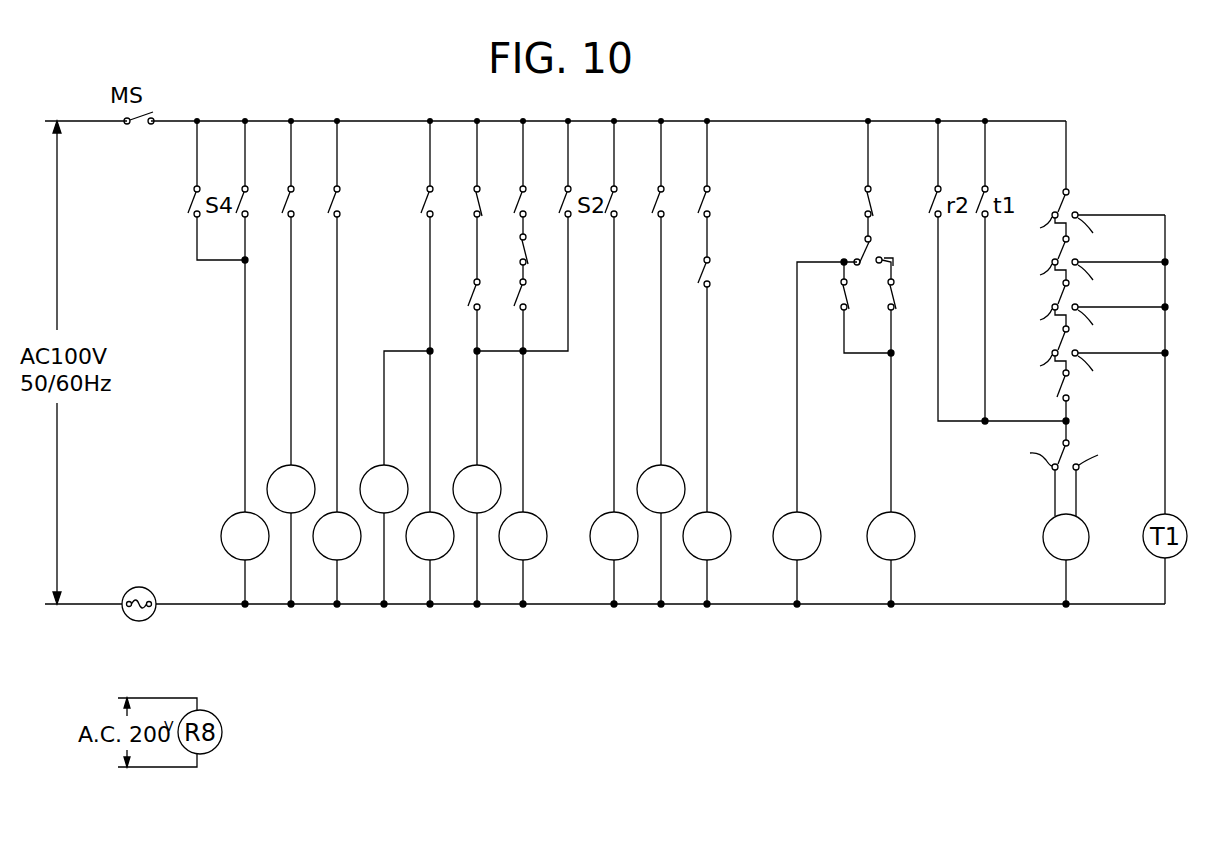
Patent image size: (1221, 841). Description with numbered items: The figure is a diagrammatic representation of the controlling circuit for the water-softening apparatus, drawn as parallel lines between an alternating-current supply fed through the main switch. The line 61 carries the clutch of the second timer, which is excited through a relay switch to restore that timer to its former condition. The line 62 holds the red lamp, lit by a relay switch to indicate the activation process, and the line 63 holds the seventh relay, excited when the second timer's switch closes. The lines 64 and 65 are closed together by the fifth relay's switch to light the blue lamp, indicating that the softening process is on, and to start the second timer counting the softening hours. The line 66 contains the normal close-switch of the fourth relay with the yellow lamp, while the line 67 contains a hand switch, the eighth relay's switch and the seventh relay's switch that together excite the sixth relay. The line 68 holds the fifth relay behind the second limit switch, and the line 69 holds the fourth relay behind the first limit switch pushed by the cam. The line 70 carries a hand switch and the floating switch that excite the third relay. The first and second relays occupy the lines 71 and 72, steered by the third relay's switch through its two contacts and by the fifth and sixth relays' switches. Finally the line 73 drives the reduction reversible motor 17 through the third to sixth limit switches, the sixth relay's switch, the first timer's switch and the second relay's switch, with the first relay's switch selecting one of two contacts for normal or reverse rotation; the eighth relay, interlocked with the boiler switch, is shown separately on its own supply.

The reduction reversible motor 17 is at (1044, 550).
The line 61 is at (248, 379).
The line 62 is at (294, 379).
The line 63 is at (340, 379).
The line 64 is at (395, 494).
The line 65 is at (433, 379).
The line 66 is at (510, 379).
The line 67 is at (529, 379).
The line 68 is at (619, 379).
The line 69 is at (666, 379).
The line 70 is at (713, 379).
The line 71 is at (815, 449).
The line 72 is at (871, 379).
The line 73 is at (1081, 413).